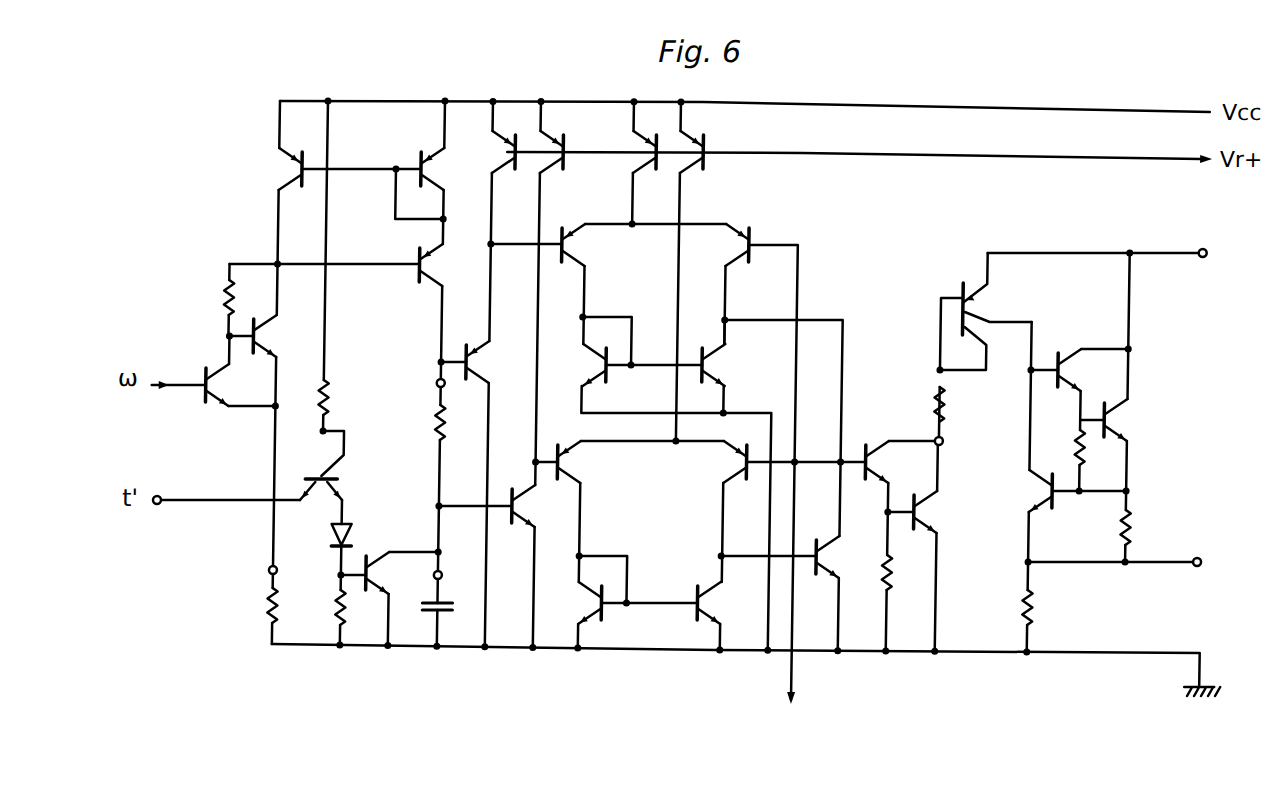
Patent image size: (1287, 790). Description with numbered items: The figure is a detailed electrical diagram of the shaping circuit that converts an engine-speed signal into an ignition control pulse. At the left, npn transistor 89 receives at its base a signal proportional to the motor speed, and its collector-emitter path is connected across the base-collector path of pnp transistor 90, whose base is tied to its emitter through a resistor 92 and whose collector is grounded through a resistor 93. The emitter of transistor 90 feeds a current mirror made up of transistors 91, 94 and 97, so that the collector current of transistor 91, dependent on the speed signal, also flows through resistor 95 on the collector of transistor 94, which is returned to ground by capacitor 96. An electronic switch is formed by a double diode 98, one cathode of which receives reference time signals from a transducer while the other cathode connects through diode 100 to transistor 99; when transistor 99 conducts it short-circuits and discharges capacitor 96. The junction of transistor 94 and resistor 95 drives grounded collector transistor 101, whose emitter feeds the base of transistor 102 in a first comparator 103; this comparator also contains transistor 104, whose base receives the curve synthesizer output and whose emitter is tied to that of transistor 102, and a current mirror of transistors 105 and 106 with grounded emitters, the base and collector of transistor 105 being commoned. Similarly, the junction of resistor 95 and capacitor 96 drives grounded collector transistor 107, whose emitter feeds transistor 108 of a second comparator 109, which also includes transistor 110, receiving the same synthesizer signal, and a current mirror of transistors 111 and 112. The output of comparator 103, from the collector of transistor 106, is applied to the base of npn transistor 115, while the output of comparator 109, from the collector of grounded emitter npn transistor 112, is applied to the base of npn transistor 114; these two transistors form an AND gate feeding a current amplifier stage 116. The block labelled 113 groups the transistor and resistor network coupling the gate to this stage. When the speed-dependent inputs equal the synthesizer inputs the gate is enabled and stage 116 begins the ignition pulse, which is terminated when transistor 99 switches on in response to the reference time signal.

The npn transistor 89 is at (203, 397).
The pnp transistor 90 is at (268, 336).
The transistor 91 is at (298, 169).
The resistor 92 is at (226, 305).
The resistor 93 is at (270, 612).
The transistor 94 is at (418, 285).
The resistor 95 is at (439, 432).
The capacitor 96 is at (448, 609).
The transistor 97 is at (418, 157).
The double diode 98 is at (320, 476).
The transistor 99 is at (368, 594).
The diode 100 is at (352, 545).
The grounded collector transistor 101 is at (466, 344).
The transistor 102 is at (560, 232).
The first comparator 103 is at (655, 251).
The transistor 104 is at (750, 232).
The transistor 105 is at (602, 366).
The transistor 106 is at (710, 370).
The grounded collector transistor 107 is at (519, 513).
The transistor 108 is at (566, 456).
The second comparator 109 is at (632, 548).
The transistor 110 is at (744, 462).
The transistor 111 is at (604, 620).
The grounded emitter npn transistor 112 is at (705, 617).
The current mirror circuit 113 is at (959, 452).
The npn transistor 114 is at (820, 544).
The npn transistor 115 is at (868, 446).
The current amplifier stage 116 is at (1094, 450).